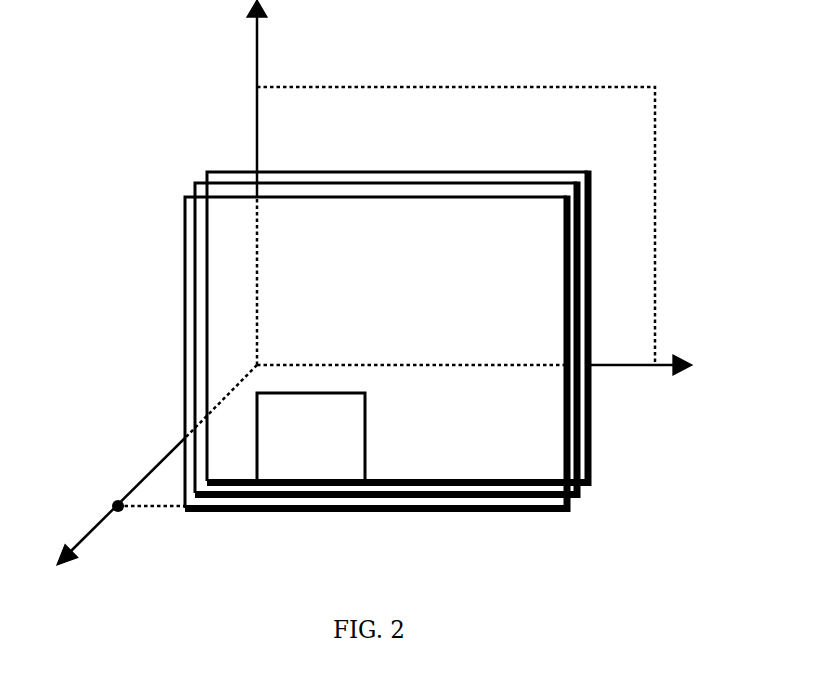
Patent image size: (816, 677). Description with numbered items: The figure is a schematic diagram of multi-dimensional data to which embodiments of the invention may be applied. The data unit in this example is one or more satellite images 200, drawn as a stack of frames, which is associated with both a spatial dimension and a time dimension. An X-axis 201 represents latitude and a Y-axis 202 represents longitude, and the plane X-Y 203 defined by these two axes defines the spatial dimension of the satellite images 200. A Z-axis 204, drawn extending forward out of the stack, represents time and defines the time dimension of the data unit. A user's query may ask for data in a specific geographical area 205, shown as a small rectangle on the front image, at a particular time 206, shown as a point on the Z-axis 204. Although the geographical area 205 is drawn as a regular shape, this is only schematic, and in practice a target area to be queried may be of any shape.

The satellite images 200 is at (185, 277).
The X-axis 201 is at (622, 363).
The Y-axis 202 is at (255, 137).
The plane X-Y 203 is at (512, 98).
The Z-axis 204 is at (98, 523).
The geographical area 205 is at (312, 483).
The time 206 is at (110, 503).